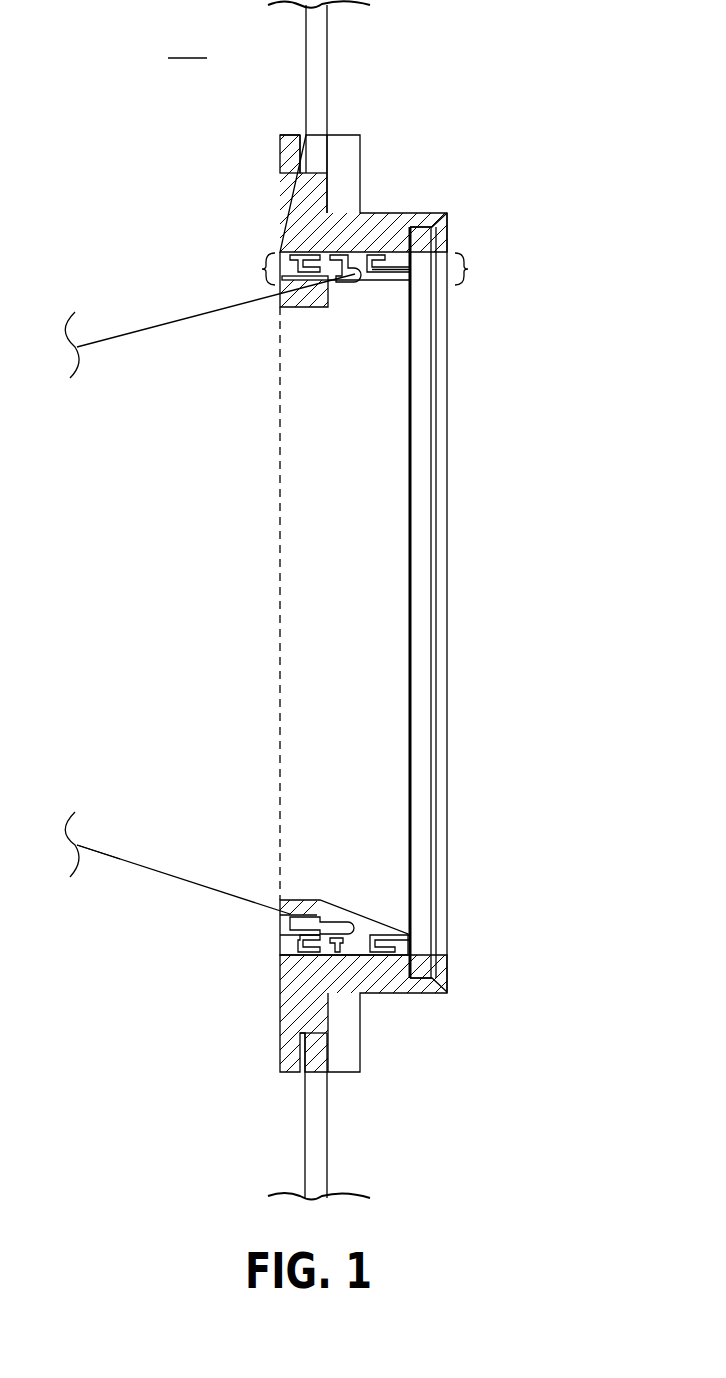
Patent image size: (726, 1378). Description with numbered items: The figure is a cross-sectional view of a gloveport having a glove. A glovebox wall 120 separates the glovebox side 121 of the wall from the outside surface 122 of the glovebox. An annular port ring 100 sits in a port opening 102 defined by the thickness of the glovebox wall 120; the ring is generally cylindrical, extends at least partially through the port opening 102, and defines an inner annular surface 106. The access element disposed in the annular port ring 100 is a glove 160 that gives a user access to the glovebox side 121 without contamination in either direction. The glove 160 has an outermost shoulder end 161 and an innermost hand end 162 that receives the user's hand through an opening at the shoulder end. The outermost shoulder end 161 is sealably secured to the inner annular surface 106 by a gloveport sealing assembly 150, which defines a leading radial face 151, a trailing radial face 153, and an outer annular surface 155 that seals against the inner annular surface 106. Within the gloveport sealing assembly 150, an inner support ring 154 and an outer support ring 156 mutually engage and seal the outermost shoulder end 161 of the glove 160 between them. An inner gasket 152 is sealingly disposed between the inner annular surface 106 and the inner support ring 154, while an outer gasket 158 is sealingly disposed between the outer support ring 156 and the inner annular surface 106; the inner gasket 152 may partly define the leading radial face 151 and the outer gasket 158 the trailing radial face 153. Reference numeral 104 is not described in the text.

The annular port ring 100 is at (362, 222).
The port opening 102 is at (305, 675).
The panel frame 104 is at (420, 213).
The inner annular surface 106 is at (362, 256).
The glovebox wall 120 is at (316, 70).
The glovebox side 121 is at (187, 45).
The outside surface 122 is at (327, 123).
The gloveport sealing assembly 150 is at (256, 318).
The leading radial face 151 is at (276, 272).
The inner gasket 152 is at (294, 255).
The trailing radial face 153 is at (416, 269).
The inner support ring 154 is at (332, 283).
The outer annular surface 155 is at (317, 242).
The outer support ring 156 is at (378, 270).
The outer gasket 158 is at (407, 266).
The glove 160 is at (130, 863).
The outermost shoulder end 161 is at (316, 900).
The innermost hand end 162 is at (45, 802).